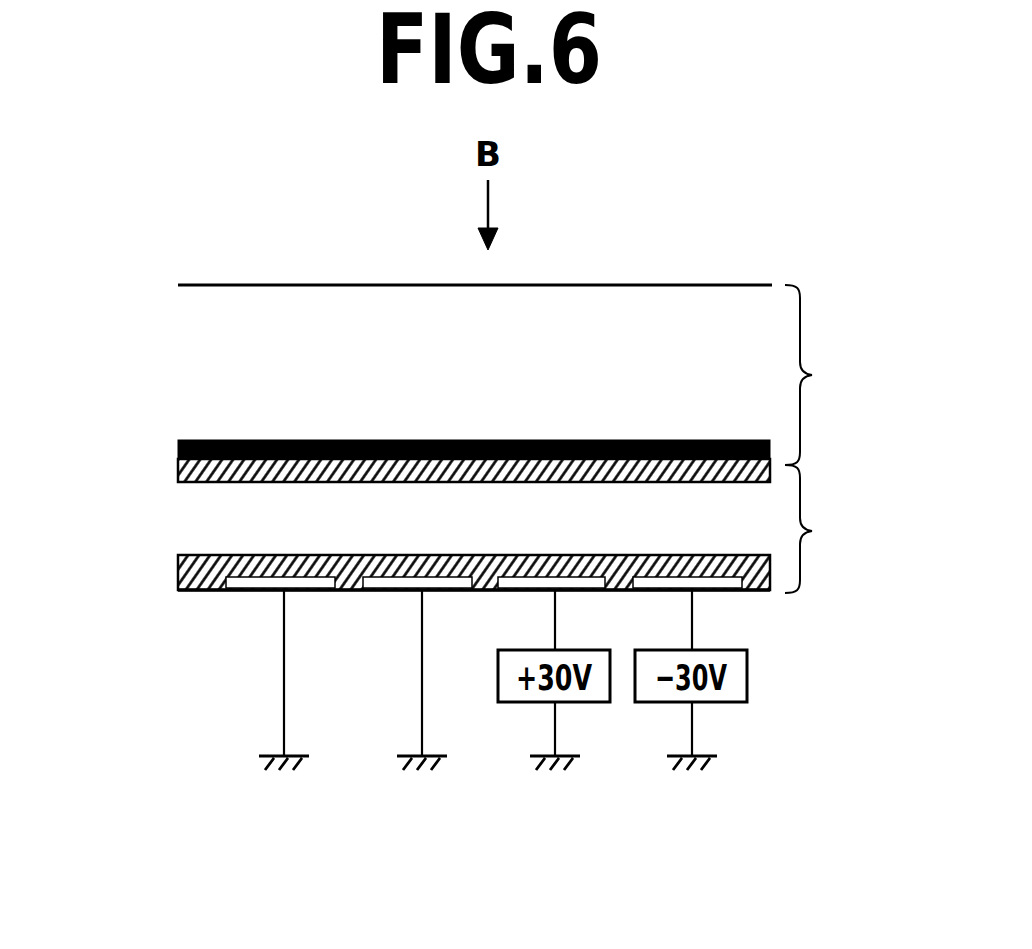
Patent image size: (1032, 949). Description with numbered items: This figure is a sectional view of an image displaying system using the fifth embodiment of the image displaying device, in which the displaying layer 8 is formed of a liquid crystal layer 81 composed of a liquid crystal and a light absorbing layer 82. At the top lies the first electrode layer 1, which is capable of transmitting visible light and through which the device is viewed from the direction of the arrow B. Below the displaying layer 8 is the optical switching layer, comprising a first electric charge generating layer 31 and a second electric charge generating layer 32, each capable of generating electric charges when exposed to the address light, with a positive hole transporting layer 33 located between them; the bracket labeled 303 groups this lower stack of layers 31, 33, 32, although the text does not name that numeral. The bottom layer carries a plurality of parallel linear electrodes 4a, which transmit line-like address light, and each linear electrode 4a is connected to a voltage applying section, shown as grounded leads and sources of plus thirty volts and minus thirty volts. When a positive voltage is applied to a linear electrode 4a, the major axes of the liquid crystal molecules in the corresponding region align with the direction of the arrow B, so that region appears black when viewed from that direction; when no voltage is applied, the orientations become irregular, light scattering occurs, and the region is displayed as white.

The first electrode layer 1 is at (741, 285).
The liquid crystal layer 81 is at (196, 366).
The light absorbing layer 82 is at (178, 450).
The first electric charge generating layer 31 is at (180, 473).
The positive hole transporting layer 33 is at (187, 518).
The second electric charge generating layer 32 is at (421, 598).
The linear electrode 4a is at (256, 590).
The displaying layer 8 is at (813, 375).
The lower member 303 is at (832, 529).